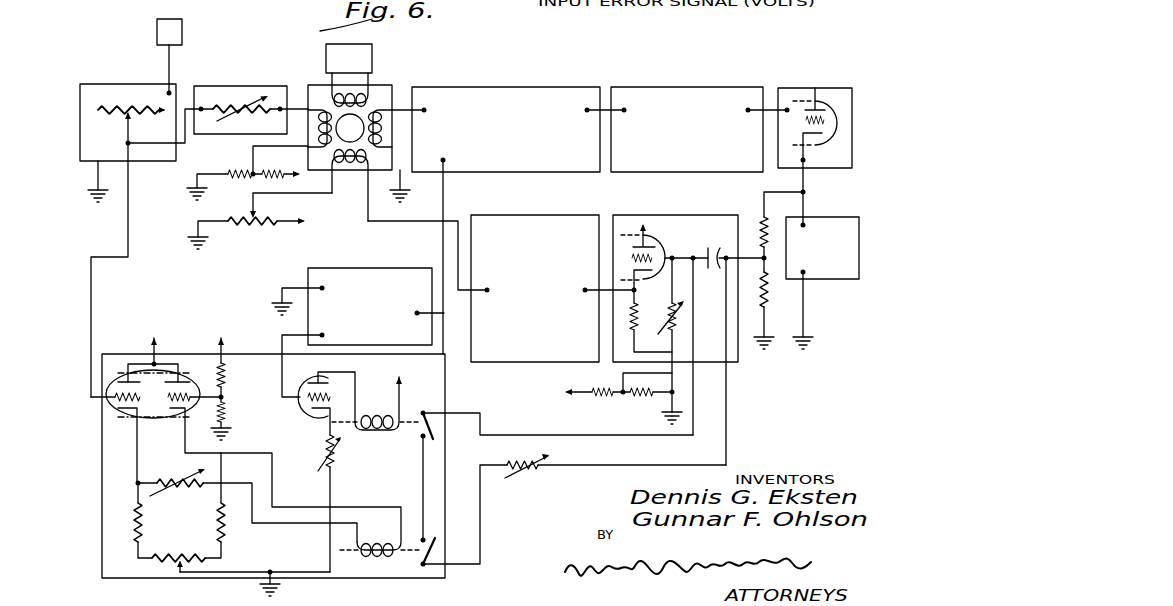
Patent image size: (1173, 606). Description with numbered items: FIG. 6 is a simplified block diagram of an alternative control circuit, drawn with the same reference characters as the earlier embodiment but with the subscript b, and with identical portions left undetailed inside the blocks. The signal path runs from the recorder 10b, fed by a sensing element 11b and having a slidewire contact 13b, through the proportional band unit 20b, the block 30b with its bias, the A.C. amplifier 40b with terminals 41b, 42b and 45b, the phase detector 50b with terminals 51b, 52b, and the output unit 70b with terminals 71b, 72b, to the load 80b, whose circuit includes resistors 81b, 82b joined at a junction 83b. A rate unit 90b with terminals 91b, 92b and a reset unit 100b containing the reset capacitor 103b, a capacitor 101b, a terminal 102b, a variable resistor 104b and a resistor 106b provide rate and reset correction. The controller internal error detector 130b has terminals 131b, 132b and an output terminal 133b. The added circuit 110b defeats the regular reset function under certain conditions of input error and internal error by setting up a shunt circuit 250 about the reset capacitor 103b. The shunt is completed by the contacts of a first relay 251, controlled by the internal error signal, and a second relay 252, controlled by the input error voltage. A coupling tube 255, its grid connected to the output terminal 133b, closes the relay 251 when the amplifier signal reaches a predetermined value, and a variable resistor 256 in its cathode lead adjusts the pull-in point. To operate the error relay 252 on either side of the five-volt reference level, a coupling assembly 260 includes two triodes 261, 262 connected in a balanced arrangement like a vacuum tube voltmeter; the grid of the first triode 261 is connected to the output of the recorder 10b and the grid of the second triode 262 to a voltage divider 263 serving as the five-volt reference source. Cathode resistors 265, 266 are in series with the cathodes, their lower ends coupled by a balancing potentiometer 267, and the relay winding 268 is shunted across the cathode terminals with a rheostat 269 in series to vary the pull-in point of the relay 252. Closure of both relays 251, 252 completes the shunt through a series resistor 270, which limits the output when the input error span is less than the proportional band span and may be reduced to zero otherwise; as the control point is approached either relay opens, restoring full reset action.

The recorder 10b is at (177, 156).
The sensing element 11b is at (156, 35).
The recorder slidewire contact 13b is at (130, 146).
The proportional band unit 20b is at (260, 86).
The converter with bias 30b is at (388, 84).
The A.C. amplifier 40b is at (521, 109).
The amplifier input terminal 41b is at (426, 112).
The amplifier output terminal 42b is at (587, 110).
The amplifier feedback terminal 45b is at (446, 160).
The phase detector 50b is at (707, 109).
The phase detector input terminal 51b is at (626, 112).
The phase detector output terminal 52b is at (746, 112).
The output unit 70b is at (842, 92).
The output input terminal 71b is at (791, 121).
The output terminal 72b is at (806, 160).
The load 80b is at (849, 248).
The resistor 81b is at (767, 222).
The resistor 82b is at (764, 288).
The junction conductor 83b is at (760, 219).
The rate unit 90b is at (548, 249).
The rate unit output terminal 91b is at (583, 290).
The rate unit input terminal 92b is at (487, 288).
The reset unit 100b is at (610, 212).
The capacitor 101b is at (714, 272).
The reset unit input terminal 102b is at (650, 295).
The reset capacitor 103b is at (722, 250).
The variable resistor 104b is at (684, 318).
The resistor 106b is at (630, 316).
The controller switching circuit 110b is at (250, 352).
The controller internal error detector 130b is at (306, 276).
The error detector terminal 131b is at (416, 312).
The error detector terminal 132b is at (324, 290).
The output terminal of the internal error detector 133b is at (324, 333).
The shunt circuit 250 is at (600, 439).
The first relay 251 is at (420, 432).
The second relay 252 is at (430, 544).
The coupling tube 255 is at (303, 413).
The variable resistor 256 is at (326, 452).
The coupling assembly 260 is at (187, 363).
The first triode 261 is at (112, 418).
The second triode 262 is at (183, 420).
The voltage divider 263 is at (224, 380).
The cathode resistor 265 is at (141, 516).
The cathode resistor 266 is at (218, 522).
The balancing potentiometer 267 is at (184, 555).
The relay winding 268 is at (386, 560).
The rheostat 269 is at (175, 480).
The series resistor 270 is at (508, 462).